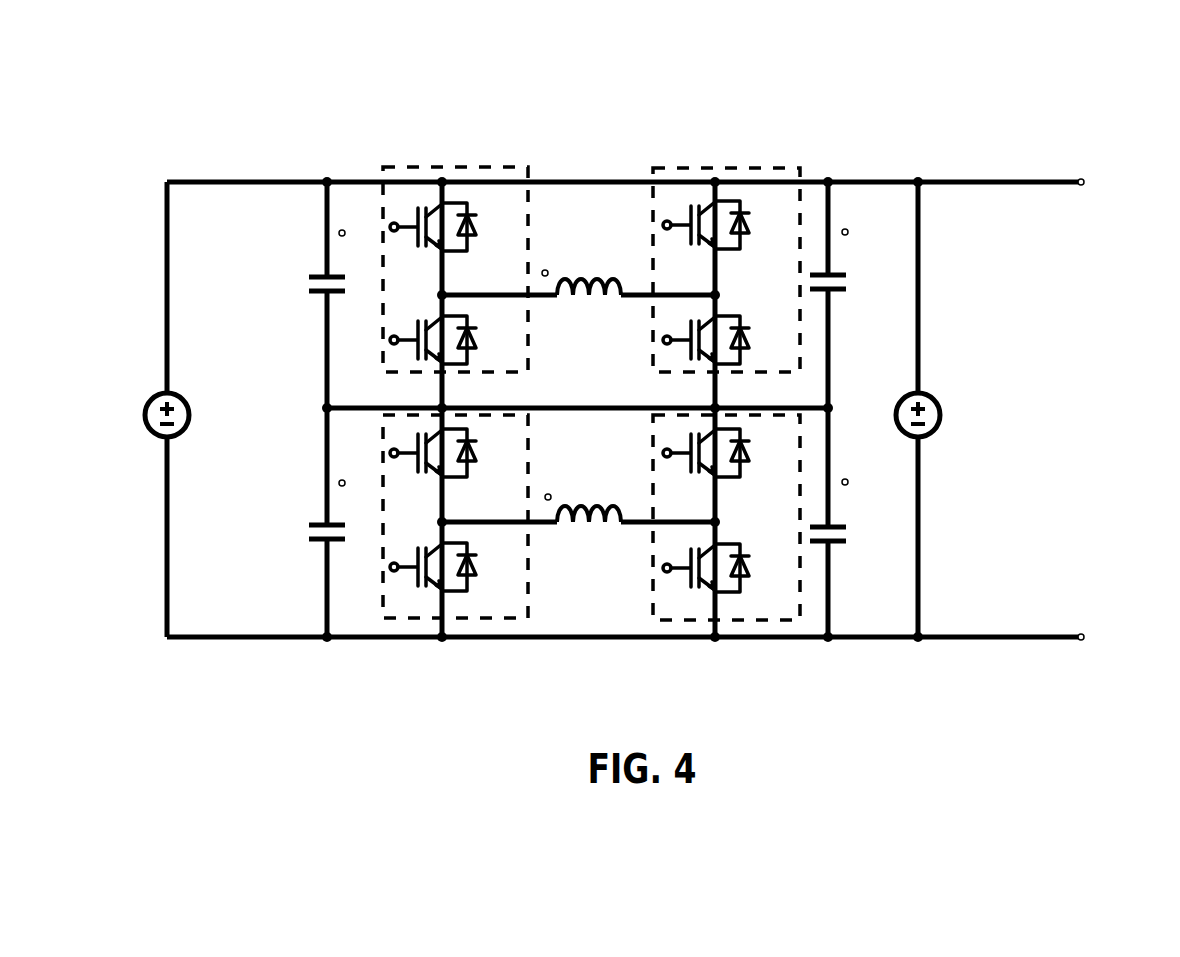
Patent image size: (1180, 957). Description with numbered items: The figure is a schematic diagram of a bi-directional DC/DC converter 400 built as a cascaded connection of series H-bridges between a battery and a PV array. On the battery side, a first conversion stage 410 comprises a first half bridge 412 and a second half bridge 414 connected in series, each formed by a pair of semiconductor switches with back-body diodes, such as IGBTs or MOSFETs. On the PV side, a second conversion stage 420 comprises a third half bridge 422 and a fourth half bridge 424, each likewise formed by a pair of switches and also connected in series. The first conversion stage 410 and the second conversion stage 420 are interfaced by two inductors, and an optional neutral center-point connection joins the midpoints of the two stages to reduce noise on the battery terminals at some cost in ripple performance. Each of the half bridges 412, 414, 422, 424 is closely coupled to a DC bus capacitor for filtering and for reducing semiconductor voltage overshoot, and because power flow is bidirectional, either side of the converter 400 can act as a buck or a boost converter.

The DC/DC converter 400 is at (567, 43).
The first conversion stage 410 is at (347, 109).
The first half bridge 412 is at (435, 162).
The second half bridge 414 is at (460, 627).
The second conversion stage 420 is at (903, 114).
The third half bridge 422 is at (693, 160).
The fourth half bridge 424 is at (675, 640).